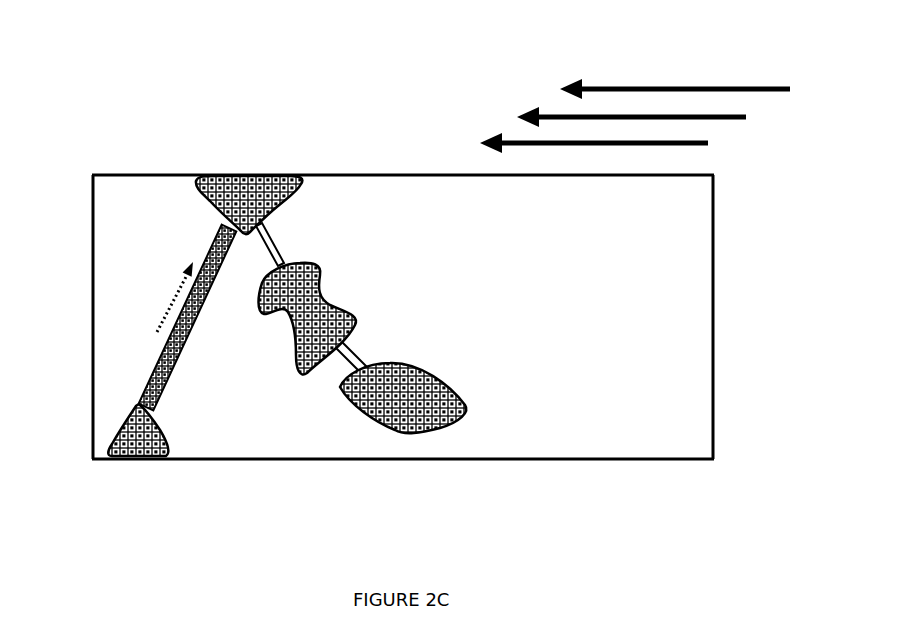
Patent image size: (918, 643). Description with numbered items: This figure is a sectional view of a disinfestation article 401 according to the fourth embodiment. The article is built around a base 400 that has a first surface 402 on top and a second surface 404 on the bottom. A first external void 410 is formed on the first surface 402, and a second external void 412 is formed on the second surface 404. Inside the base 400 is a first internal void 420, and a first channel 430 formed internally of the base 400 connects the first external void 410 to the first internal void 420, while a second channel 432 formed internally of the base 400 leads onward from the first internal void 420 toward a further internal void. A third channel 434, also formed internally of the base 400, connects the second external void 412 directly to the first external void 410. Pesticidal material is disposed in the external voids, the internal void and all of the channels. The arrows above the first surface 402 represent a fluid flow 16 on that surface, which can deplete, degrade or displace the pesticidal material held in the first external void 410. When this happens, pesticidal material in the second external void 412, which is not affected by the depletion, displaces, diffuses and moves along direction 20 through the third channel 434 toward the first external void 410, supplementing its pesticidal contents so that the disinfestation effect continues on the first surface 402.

The disinfestation article 401 is at (132, 72).
The base 400 is at (145, 192).
The first surface 402 is at (440, 175).
The second surface 404 is at (253, 460).
The first external void 410 is at (242, 187).
The second external void 412 is at (143, 443).
The first internal void 420 is at (293, 367).
The first channel 430 is at (280, 253).
The second channel 432 is at (353, 350).
The third channel 434 is at (157, 374).
The direction 20 is at (167, 312).
The fluid flow 16 is at (642, 95).